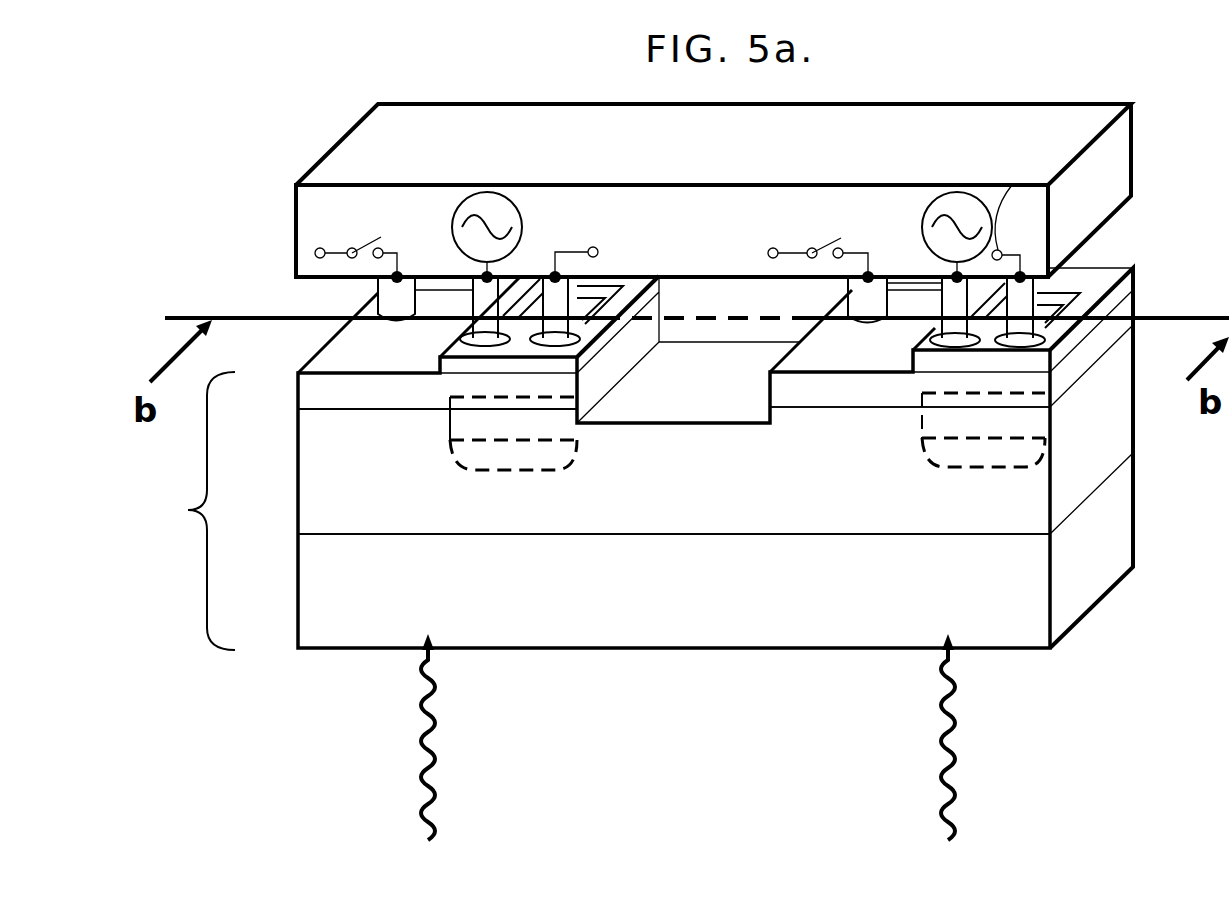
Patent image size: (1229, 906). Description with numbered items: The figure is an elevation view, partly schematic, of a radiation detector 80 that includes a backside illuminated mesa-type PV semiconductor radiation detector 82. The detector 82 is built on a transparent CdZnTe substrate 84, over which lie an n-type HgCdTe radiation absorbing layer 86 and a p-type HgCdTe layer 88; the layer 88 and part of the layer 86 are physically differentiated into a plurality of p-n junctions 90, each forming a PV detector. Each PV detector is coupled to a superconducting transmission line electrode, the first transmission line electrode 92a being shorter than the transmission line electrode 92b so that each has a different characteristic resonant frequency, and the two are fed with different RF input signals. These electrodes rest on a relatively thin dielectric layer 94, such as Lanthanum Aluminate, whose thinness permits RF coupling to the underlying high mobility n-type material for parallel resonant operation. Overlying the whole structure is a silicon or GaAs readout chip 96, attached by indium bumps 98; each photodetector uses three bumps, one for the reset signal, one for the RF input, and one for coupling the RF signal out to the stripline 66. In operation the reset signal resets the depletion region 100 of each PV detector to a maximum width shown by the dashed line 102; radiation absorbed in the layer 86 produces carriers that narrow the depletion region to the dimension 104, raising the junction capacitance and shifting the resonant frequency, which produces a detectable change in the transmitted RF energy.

The readout chip 96 is at (1133, 133).
The stripline 66 is at (569, 249).
The radiation detector 80 is at (272, 654).
The PV semiconductor radiation detector 82 is at (188, 510).
The transparent CdZnTe substrate 84 is at (1133, 505).
The n-type HgCdTe radiation absorbing layer 86 is at (1133, 410).
The p-type HgCdTe layer 88 is at (310, 387).
The p-n junction 90 is at (298, 409).
The first transmission line electrode 92a is at (618, 292).
The transmission line electrode 92b is at (1063, 290).
The dielectric layer 94 is at (657, 284).
The indium bumps 98 is at (377, 294).
The depletion region 100 is at (450, 420).
The dashed line 102 is at (480, 467).
The reduced depletion width dimension 104 is at (453, 443).